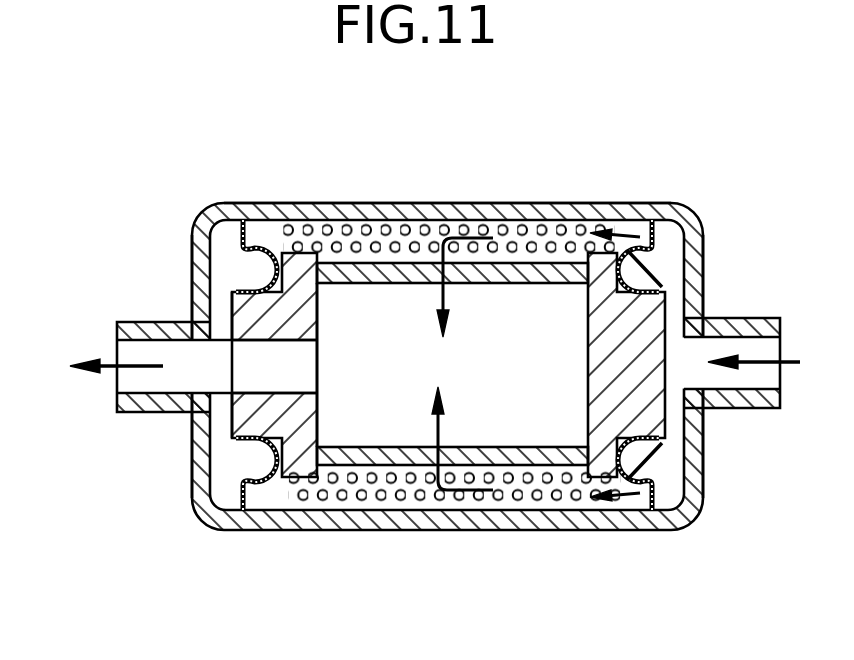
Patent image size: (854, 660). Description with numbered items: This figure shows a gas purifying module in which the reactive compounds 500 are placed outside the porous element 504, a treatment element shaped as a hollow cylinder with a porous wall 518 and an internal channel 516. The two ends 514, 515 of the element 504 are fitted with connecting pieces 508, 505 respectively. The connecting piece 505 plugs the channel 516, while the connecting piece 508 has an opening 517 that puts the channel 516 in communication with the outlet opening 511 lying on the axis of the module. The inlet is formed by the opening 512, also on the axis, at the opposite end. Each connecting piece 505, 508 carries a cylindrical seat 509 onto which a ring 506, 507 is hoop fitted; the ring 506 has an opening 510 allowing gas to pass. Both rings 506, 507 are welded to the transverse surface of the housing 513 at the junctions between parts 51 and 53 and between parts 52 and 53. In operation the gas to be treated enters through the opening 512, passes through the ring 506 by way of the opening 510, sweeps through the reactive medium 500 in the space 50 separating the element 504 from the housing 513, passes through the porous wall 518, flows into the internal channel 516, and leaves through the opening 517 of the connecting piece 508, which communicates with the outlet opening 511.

The space 50 is at (375, 228).
The housing part 51 is at (198, 252).
The housing part 52 is at (692, 268).
The housing part 53 is at (470, 210).
The reactive compounds 500 is at (375, 505).
The porous element 504 is at (505, 265).
The connecting piece 505 is at (604, 228).
The ring 506 is at (668, 232).
The ring 507 is at (255, 242).
The connecting piece 508 is at (298, 280).
The cylindrical seat 509 is at (245, 448).
The opening 510 is at (653, 222).
The outlet opening 511 is at (160, 357).
The inlet opening 512 is at (715, 353).
The housing 513 is at (424, 205).
The end of the element 514 is at (333, 385).
The end of the element 515 is at (578, 372).
The internal channel 516 is at (427, 363).
The opening 517 is at (272, 388).
The porous wall 518 is at (549, 280).